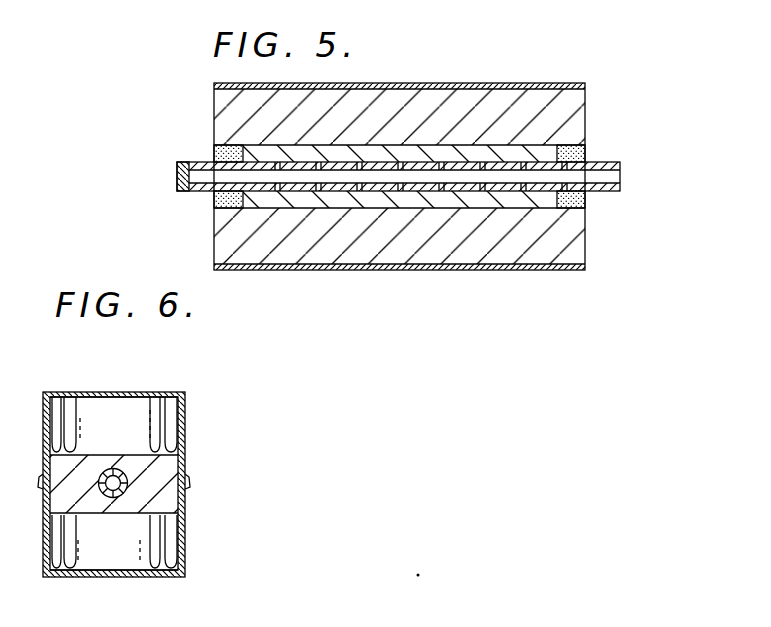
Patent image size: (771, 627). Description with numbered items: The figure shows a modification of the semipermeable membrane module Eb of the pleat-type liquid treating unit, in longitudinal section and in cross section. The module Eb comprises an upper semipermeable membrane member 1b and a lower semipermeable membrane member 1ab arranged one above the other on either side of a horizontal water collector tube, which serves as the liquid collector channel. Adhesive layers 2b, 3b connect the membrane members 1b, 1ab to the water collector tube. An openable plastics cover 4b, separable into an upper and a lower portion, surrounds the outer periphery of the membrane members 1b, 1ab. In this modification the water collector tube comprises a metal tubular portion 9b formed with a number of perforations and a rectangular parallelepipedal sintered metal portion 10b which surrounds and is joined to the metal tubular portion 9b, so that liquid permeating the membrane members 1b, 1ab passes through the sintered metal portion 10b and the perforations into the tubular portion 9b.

In FIG. 5, the semipermeable membrane module Eb is at (498, 102).
In FIG. 6, the semipermeable membrane module Eb is at (162, 381).
In FIG. 5, the upper semipermeable membrane member 1b is at (573, 112).
In FIG. 6, the upper semipermeable membrane member 1b is at (90, 408).
In FIG. 5, the lower semipermeable membrane member 1ab is at (575, 232).
In FIG. 6, the lower semipermeable membrane member 1ab is at (137, 547).
In FIG. 5, the front adhesive layer 2b is at (215, 155).
In FIG. 5, the rear adhesive layer 3b is at (585, 153).
In FIG. 5, the openable plastics cover 4b is at (560, 85).
In FIG. 6, the openable plastics cover 4b is at (186, 408).
In FIG. 5, the metal tubular portion 9b is at (472, 191).
In FIG. 6, the metal tubular portion 9b is at (122, 478).
In FIG. 5, the sintered metal portion 10b is at (422, 199).
In FIG. 6, the sintered metal portion 10b is at (165, 497).